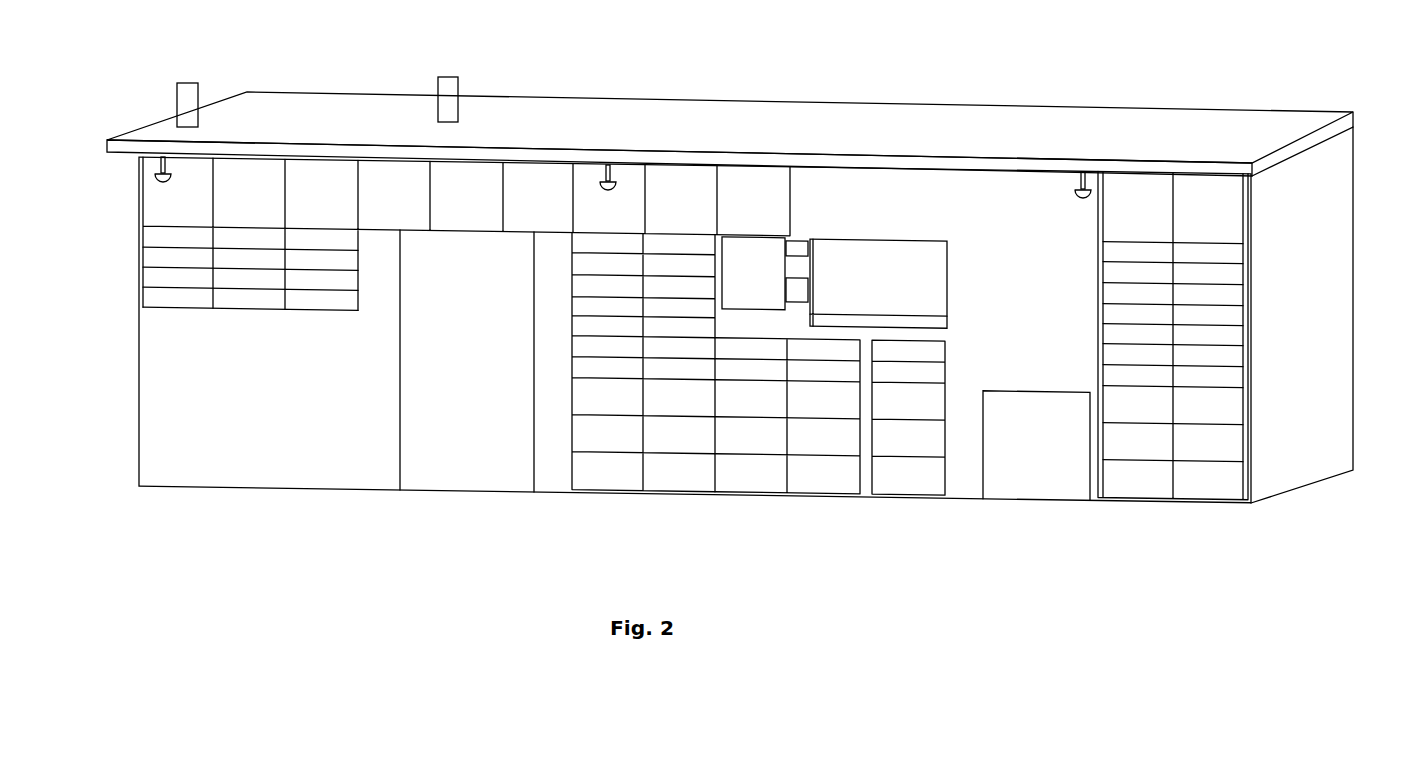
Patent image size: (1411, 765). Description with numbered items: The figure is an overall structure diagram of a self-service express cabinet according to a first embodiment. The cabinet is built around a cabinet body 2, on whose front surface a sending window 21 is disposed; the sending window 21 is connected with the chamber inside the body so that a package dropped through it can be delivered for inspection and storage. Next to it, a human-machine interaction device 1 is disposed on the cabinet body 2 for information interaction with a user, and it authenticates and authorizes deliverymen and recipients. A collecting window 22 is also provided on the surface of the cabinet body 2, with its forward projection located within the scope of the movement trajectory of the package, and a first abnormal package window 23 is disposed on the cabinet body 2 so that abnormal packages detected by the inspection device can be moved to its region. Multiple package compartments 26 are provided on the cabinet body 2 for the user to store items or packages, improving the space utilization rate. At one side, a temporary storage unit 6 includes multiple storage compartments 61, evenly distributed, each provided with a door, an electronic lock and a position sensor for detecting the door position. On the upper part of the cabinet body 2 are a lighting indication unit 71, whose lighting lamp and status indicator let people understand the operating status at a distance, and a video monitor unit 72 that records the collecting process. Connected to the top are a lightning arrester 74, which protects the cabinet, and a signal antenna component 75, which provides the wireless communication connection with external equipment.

The human-machine interaction device 1 is at (765, 273).
The cabinet body 2 is at (137, 450).
The temporary storage unit 6 is at (1331, 278).
The sending window 21 is at (882, 262).
The collecting window 22 is at (409, 411).
The first abnormal package window 23 is at (1010, 488).
The package compartments 26 is at (157, 259).
The storage compartments 61 is at (1228, 342).
The lighting indication unit 71 is at (612, 168).
The video monitor unit 72 is at (153, 172).
The lightning arrester 74 is at (449, 97).
The signal antenna component 75 is at (187, 101).